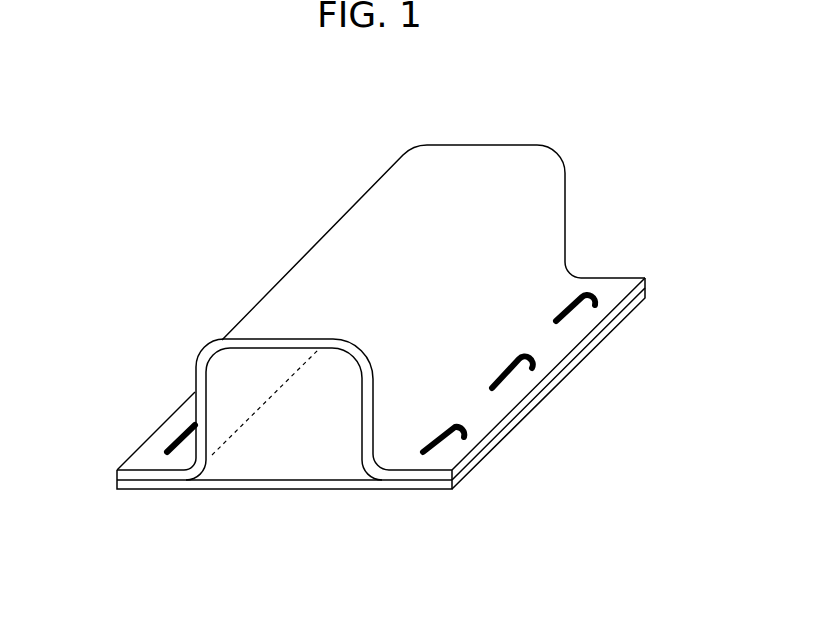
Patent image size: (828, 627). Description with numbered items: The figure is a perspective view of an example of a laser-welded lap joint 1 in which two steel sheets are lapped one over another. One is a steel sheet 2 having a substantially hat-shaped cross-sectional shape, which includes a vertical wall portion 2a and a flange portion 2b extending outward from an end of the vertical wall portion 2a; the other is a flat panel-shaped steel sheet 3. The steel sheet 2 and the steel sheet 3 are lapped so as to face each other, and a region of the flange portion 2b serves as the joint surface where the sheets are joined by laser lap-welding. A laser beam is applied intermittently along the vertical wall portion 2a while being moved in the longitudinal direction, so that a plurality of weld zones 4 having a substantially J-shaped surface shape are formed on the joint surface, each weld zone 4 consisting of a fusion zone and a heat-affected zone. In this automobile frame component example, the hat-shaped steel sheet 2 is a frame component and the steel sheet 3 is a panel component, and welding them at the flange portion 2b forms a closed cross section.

The laser-welded lap joint 1 is at (291, 133).
The steel sheet 2 is at (310, 550).
The vertical wall portion 2a is at (370, 403).
The flange portion 2b is at (407, 475).
The steel sheet 3 is at (258, 486).
The weld zone 4 is at (188, 432).